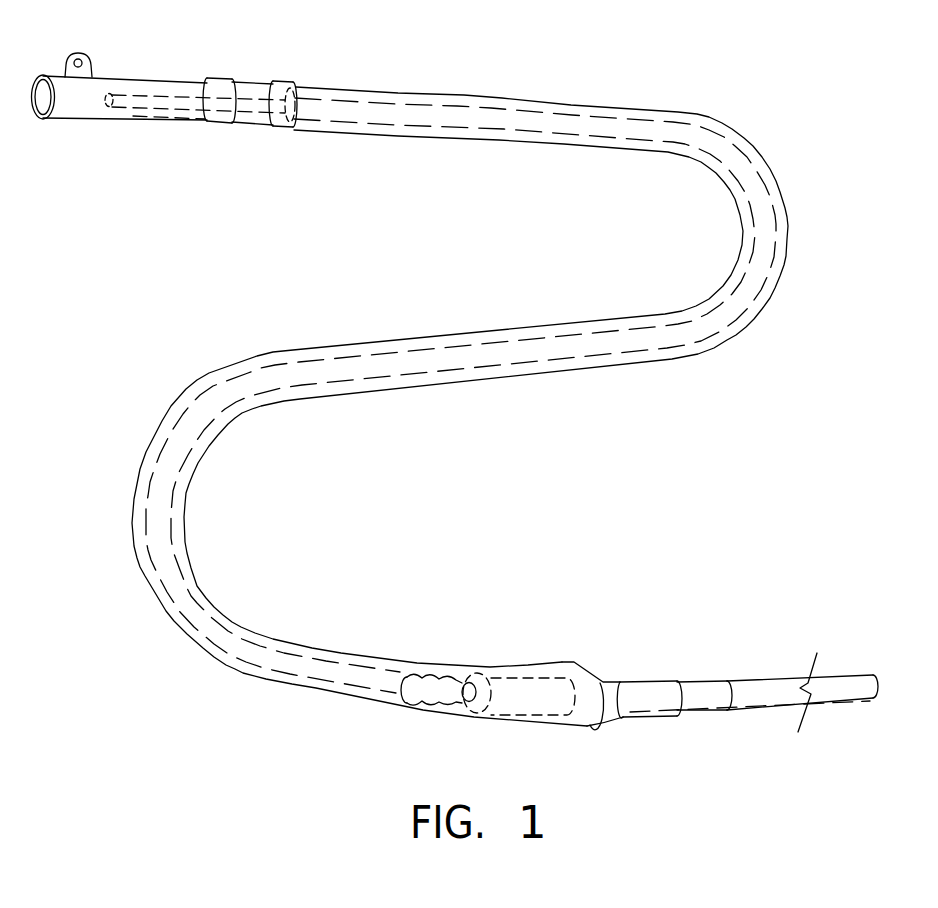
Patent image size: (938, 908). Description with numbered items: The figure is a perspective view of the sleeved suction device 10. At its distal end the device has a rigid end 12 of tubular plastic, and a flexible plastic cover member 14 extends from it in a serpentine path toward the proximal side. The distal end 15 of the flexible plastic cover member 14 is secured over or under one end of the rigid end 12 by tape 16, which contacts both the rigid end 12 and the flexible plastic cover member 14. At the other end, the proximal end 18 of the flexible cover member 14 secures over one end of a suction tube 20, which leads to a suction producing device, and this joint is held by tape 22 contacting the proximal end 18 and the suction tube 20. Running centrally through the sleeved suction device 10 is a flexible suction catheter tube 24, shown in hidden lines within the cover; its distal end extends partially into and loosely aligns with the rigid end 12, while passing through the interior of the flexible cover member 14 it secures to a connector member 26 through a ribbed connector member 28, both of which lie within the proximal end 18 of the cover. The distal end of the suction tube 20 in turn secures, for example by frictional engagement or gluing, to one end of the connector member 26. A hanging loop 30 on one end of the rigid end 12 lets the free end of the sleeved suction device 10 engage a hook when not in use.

The sleeved suction device 10 is at (803, 199).
The rigid end 12 is at (121, 77).
The flexible plastic cover member 14 is at (432, 96).
The distal end of the flexible plastic cover member 15 is at (300, 85).
The tape 16 is at (252, 128).
The proximal end of the flexible cover member 18 is at (537, 663).
The suction tube 20 is at (758, 682).
The tape 22 is at (660, 682).
The flexible suction catheter tube 24 is at (174, 93).
The connector member 26 is at (517, 715).
The ribbed connector member 28 is at (466, 689).
The hanging loop 30 is at (74, 53).